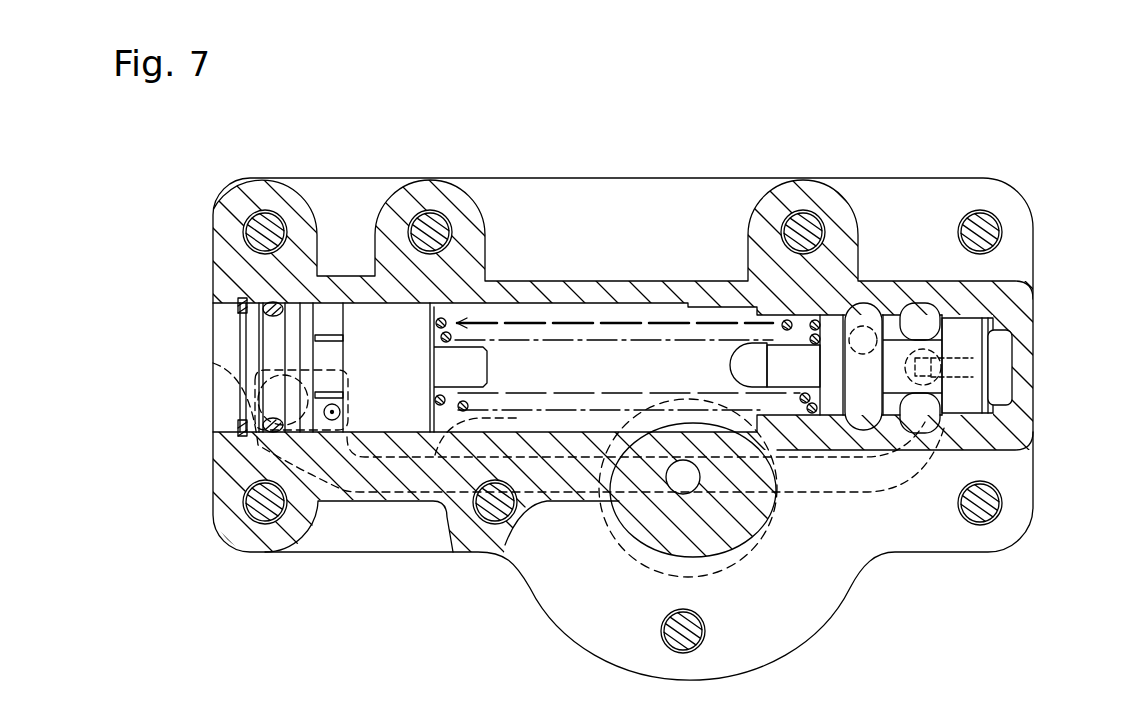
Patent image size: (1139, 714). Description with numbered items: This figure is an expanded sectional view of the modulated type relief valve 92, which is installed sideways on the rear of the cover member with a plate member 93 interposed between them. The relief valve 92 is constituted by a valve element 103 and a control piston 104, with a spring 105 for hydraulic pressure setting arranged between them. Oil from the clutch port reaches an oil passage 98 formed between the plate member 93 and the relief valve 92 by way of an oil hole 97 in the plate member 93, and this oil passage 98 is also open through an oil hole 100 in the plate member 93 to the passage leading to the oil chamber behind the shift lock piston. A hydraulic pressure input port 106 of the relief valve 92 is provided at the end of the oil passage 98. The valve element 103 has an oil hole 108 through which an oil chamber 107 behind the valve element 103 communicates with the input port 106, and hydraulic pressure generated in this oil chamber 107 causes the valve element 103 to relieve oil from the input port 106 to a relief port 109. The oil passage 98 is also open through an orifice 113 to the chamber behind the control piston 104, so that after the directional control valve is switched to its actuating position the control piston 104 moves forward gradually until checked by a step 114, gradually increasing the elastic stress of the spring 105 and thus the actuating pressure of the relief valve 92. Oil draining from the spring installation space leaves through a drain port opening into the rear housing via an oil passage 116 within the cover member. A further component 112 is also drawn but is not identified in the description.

The modulated type relief valve 92 is at (634, 296).
The plate member 93 is at (530, 213).
The oil hole 97 is at (995, 335).
The oil passage 98 is at (813, 480).
The oil hole 100 is at (213, 363).
The valve element 103 is at (953, 333).
The control piston 104 is at (397, 333).
The spring 105 is at (800, 343).
The hydraulic pressure input port 106 is at (1000, 420).
The oil chamber 107 is at (1003, 347).
The oil hole 108 is at (995, 377).
The relief port 109 is at (860, 327).
The valve piston 112 is at (329, 320).
The orifice 113 is at (333, 420).
The step 114 is at (665, 486).
The oil passage 116 is at (750, 360).